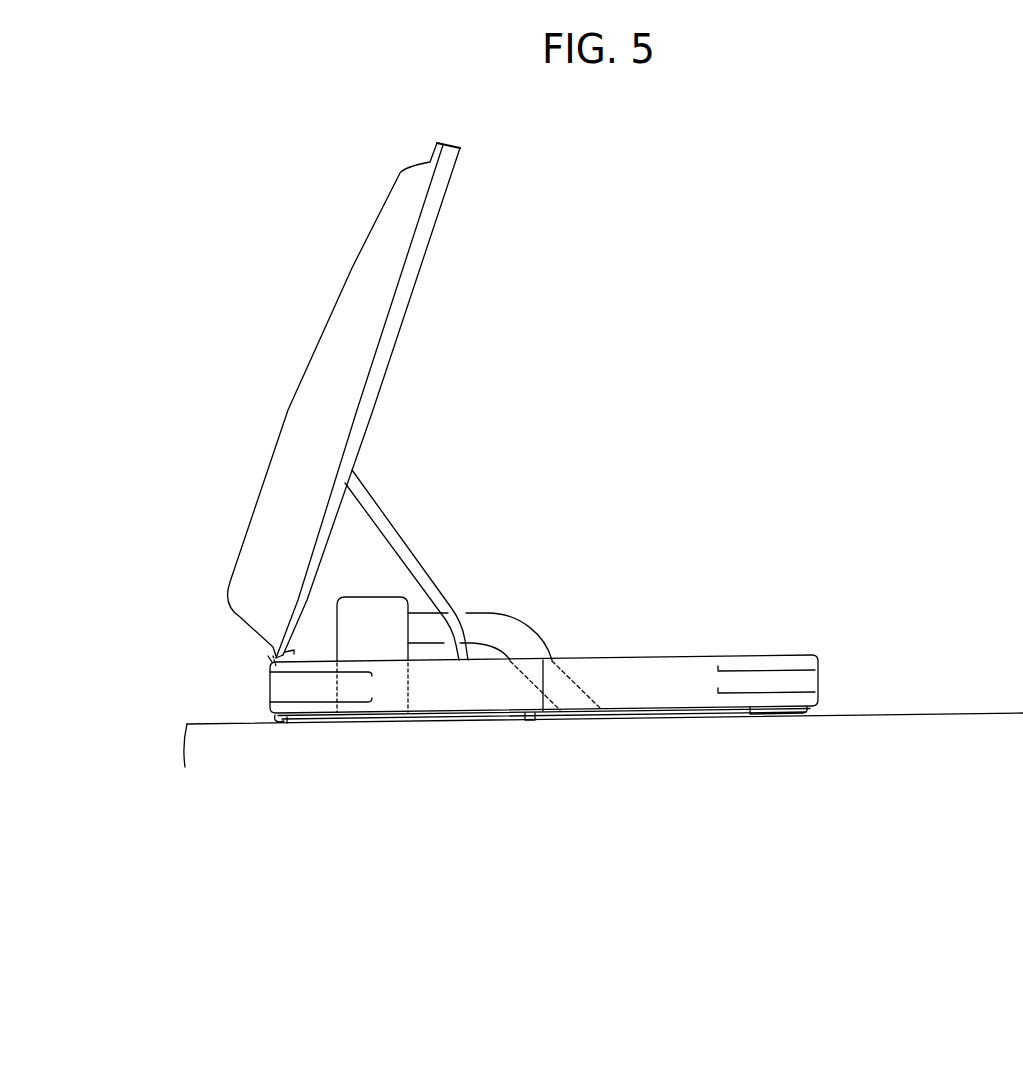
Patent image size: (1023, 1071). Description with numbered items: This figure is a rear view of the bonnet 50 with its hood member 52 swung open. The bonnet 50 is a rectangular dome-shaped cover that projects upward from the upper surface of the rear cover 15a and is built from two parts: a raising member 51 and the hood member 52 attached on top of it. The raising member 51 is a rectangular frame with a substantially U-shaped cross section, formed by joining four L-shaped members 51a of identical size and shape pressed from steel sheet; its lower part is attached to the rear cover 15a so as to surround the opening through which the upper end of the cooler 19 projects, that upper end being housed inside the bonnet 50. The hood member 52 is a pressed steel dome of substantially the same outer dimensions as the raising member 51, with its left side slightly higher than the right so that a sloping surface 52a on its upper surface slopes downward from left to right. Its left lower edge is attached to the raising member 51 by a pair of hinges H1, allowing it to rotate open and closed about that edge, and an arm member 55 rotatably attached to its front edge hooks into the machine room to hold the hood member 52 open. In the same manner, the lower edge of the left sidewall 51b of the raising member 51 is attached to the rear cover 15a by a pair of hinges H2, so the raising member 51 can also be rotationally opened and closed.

The bonnet 50 is at (653, 200).
The hood member 52 is at (311, 404).
The sloping surface 52a is at (334, 301).
The arm member 55 is at (400, 525).
The cooler 19 is at (377, 597).
The raising member 51 is at (493, 732).
The L-shaped member 51a is at (373, 707).
The left sidewall 51b is at (270, 690).
The rear cover 15a is at (957, 712).
The hinge H1 is at (270, 662).
The hinge H2 is at (287, 723).